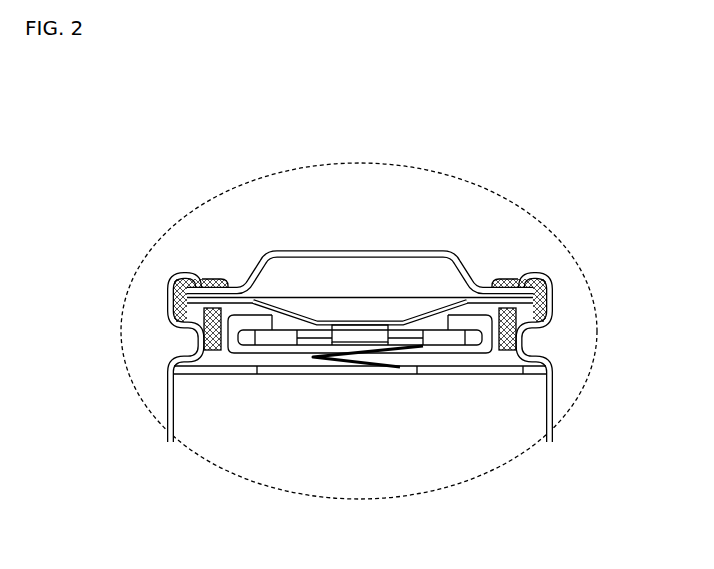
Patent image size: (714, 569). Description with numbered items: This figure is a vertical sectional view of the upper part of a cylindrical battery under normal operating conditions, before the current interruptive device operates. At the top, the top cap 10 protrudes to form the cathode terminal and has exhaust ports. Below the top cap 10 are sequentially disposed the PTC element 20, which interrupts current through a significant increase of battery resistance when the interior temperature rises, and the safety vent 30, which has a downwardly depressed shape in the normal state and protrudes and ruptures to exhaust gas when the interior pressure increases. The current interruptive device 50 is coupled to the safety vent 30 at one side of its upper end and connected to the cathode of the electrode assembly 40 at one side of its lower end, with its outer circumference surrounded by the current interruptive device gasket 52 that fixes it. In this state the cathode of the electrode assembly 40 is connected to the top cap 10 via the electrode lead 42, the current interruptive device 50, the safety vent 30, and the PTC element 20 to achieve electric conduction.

The top cap 10 is at (360, 228).
The positive temperature coefficient (PTC) element 20 is at (433, 292).
The safety vent 30 is at (246, 263).
The electrode assembly 40 is at (508, 425).
The electrode lead 42 is at (371, 370).
The current interruptive device 50 is at (293, 354).
The current interruptive device gasket 52 is at (222, 333).